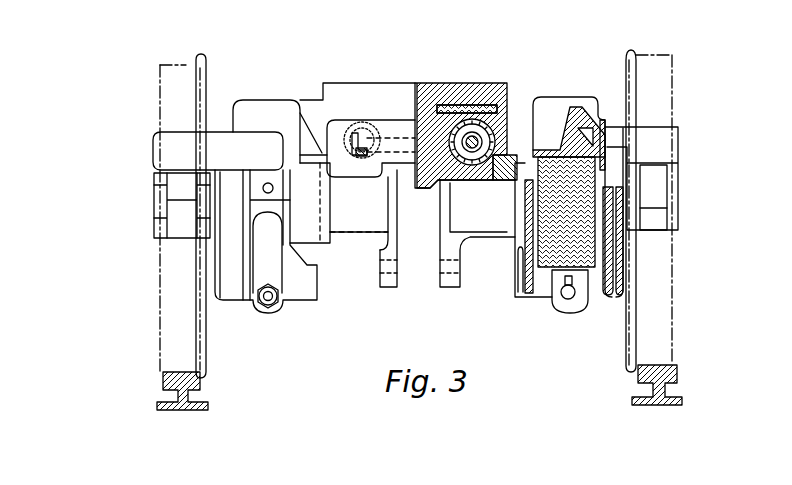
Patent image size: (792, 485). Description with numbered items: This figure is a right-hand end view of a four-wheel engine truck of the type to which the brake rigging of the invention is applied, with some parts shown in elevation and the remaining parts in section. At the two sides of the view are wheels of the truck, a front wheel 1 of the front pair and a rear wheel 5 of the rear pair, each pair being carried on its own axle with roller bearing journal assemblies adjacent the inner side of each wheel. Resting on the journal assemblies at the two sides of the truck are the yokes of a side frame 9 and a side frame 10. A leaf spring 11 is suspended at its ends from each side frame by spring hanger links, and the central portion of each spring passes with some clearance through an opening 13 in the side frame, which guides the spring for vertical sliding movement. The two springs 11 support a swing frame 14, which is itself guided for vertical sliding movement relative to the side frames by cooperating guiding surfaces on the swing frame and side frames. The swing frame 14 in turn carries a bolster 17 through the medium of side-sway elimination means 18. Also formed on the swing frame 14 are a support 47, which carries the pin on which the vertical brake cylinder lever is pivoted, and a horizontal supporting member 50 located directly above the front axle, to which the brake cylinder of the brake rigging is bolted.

The front wheel 1 is at (177, 317).
The rear wheel 5 is at (652, 303).
The side frame 9 is at (240, 295).
The side frame 10 is at (618, 302).
The leaf spring 11 is at (600, 172).
The opening 13 is at (612, 275).
The swing frame 14 is at (605, 110).
The bolster 17 is at (413, 84).
The side-sway elimination means 18 is at (356, 120).
The support 47 is at (398, 277).
The horizontal supporting member 50 is at (392, 150).